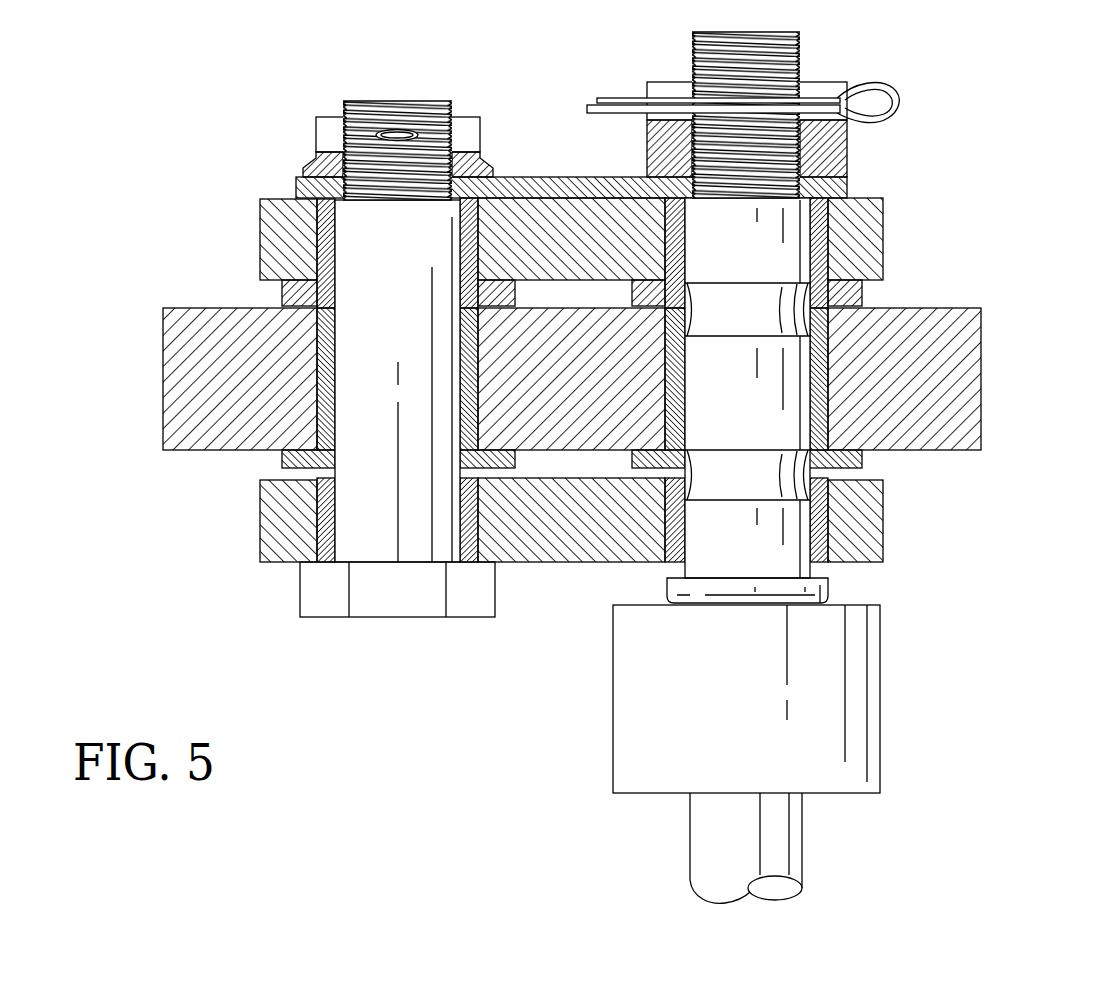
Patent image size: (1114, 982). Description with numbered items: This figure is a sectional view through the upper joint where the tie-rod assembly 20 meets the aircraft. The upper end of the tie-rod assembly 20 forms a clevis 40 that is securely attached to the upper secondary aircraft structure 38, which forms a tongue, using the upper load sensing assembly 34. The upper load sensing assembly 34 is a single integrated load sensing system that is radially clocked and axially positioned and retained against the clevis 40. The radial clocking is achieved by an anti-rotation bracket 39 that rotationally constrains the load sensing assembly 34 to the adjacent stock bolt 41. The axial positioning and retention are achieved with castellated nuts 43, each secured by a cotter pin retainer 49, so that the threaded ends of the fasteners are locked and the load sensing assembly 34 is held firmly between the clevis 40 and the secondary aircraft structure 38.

The tie-rod assembly 20 is at (895, 212).
The upper load sensing assembly 34 is at (893, 690).
The secondary aircraft structure 38 is at (992, 377).
The anti-rotation bracket 39 is at (532, 177).
The clevis 40 is at (884, 250).
The stock bolt 41 is at (397, 624).
The castellated nuts 43 is at (313, 157).
The cotter pin retainers 49 is at (891, 86).